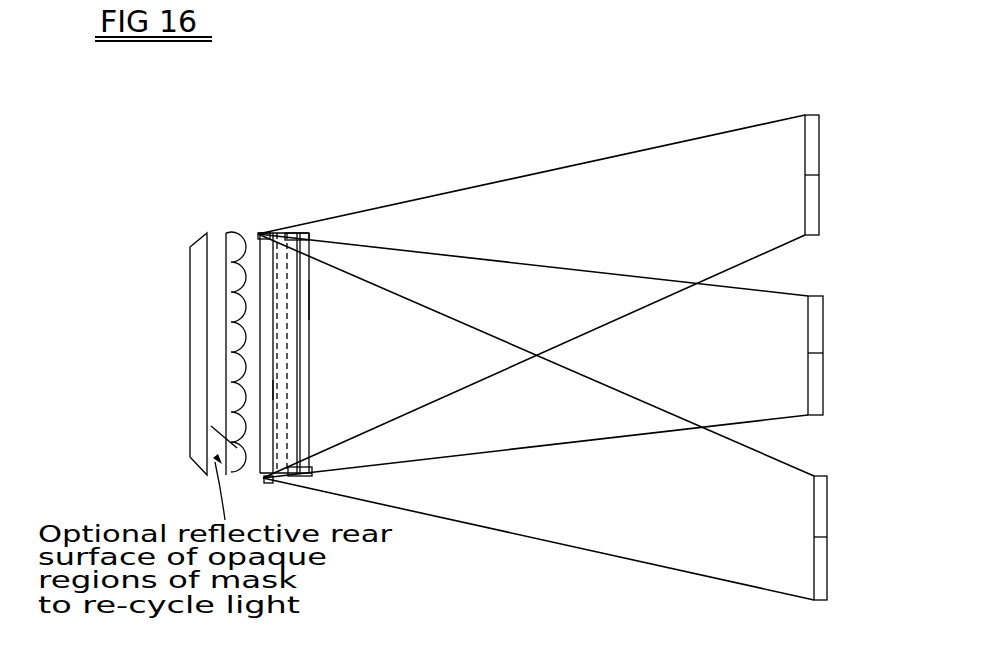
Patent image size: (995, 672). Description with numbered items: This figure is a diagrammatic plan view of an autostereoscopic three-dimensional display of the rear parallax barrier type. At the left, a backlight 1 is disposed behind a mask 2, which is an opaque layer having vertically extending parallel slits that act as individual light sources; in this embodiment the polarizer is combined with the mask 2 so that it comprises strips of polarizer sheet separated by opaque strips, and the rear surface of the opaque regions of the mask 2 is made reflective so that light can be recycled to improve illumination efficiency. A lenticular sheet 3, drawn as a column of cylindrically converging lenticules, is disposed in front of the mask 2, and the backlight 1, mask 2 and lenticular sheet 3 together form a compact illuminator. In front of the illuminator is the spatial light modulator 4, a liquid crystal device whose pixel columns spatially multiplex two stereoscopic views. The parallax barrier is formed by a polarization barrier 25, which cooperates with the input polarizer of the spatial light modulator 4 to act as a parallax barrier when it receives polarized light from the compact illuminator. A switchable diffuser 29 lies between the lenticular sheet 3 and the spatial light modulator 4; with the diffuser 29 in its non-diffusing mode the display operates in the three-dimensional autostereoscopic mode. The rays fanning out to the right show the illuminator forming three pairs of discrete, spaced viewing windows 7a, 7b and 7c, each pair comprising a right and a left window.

The backlight 1 is at (195, 242).
The mask set 2 is at (227, 233).
The lenticular sheet 3 is at (232, 232).
The spatial light modulator 4 is at (312, 302).
The viewing window 7a is at (828, 173).
The viewing window 7b is at (833, 354).
The viewing window 7c is at (838, 537).
The polarization barrier 25 is at (277, 390).
The switchable diffuser 29 is at (272, 482).